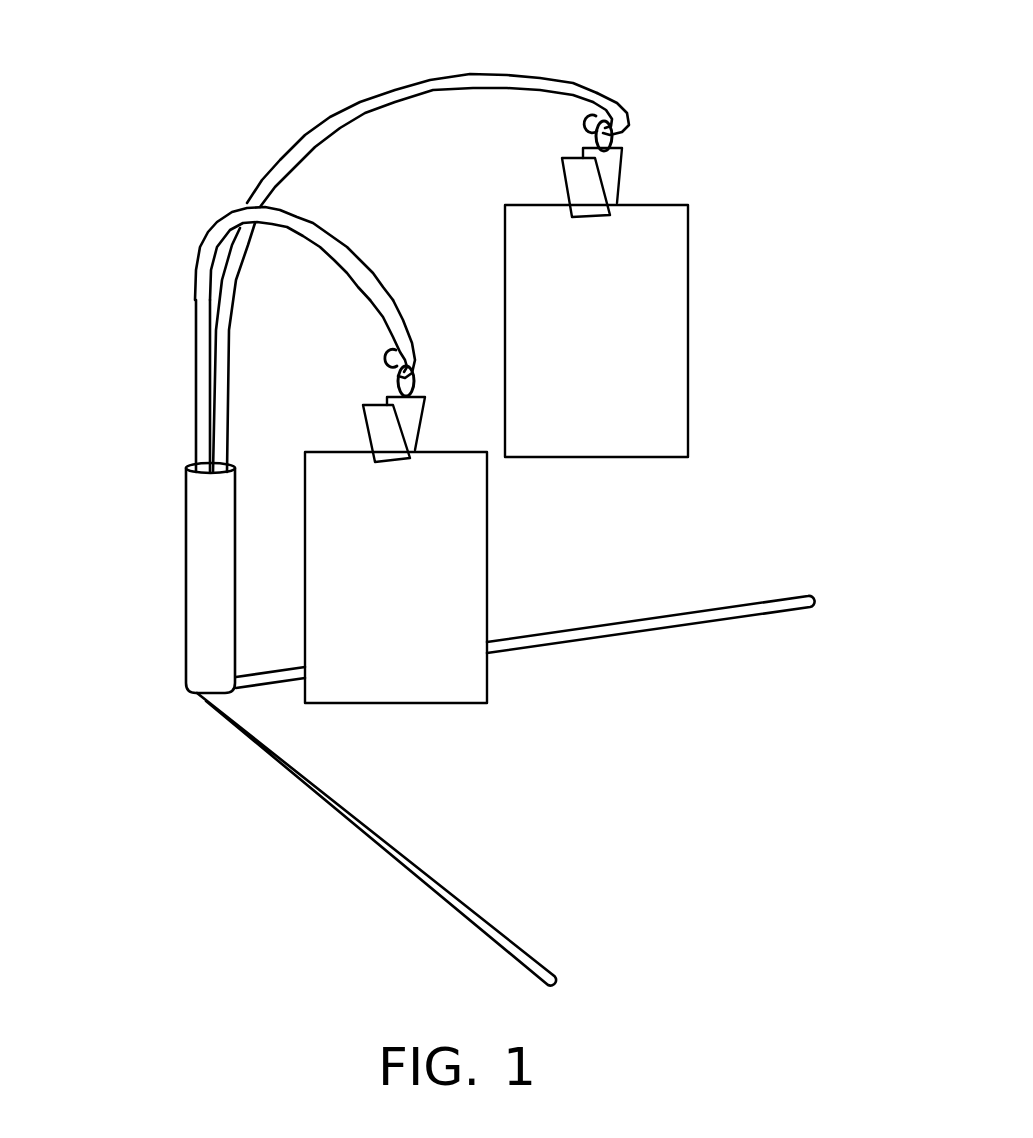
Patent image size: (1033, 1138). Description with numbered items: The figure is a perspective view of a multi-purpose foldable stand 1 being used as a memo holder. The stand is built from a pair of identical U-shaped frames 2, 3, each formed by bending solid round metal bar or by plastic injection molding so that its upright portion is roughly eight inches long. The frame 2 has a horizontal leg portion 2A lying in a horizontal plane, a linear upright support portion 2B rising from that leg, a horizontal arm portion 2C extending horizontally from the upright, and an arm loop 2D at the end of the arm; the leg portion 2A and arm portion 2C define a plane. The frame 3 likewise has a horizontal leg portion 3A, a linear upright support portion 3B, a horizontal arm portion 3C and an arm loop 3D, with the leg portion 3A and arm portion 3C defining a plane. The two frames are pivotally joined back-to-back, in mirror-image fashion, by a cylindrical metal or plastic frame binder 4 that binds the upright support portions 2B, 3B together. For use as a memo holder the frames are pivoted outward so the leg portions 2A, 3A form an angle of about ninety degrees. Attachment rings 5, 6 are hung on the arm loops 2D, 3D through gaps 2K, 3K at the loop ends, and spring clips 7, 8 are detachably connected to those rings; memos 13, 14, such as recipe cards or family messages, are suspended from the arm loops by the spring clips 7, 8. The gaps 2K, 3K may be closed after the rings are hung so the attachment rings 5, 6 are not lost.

The multi-purpose foldable stand 1 is at (218, 144).
The U-shaped frame 2 is at (408, 833).
The horizontal leg portion 2A is at (430, 908).
The linear upright support portion 2B is at (196, 350).
The horizontal arm portion 2C is at (362, 255).
The arm loop 2D is at (418, 360).
The gap 2K is at (390, 345).
The U-shaped frame 3 is at (577, 662).
The horizontal leg portion 3A is at (727, 619).
The linear upright support portion 3B is at (228, 397).
The horizontal arm portion 3C is at (490, 76).
The arm loop 3D is at (625, 105).
The gap 3K is at (584, 106).
The frame binder 4 is at (186, 575).
The attachment ring 5 is at (420, 382).
The attachment ring 6 is at (625, 142).
The spring clip 7 is at (420, 432).
The spring clip 8 is at (625, 187).
The memo 13 is at (490, 580).
The memo 14 is at (690, 326).